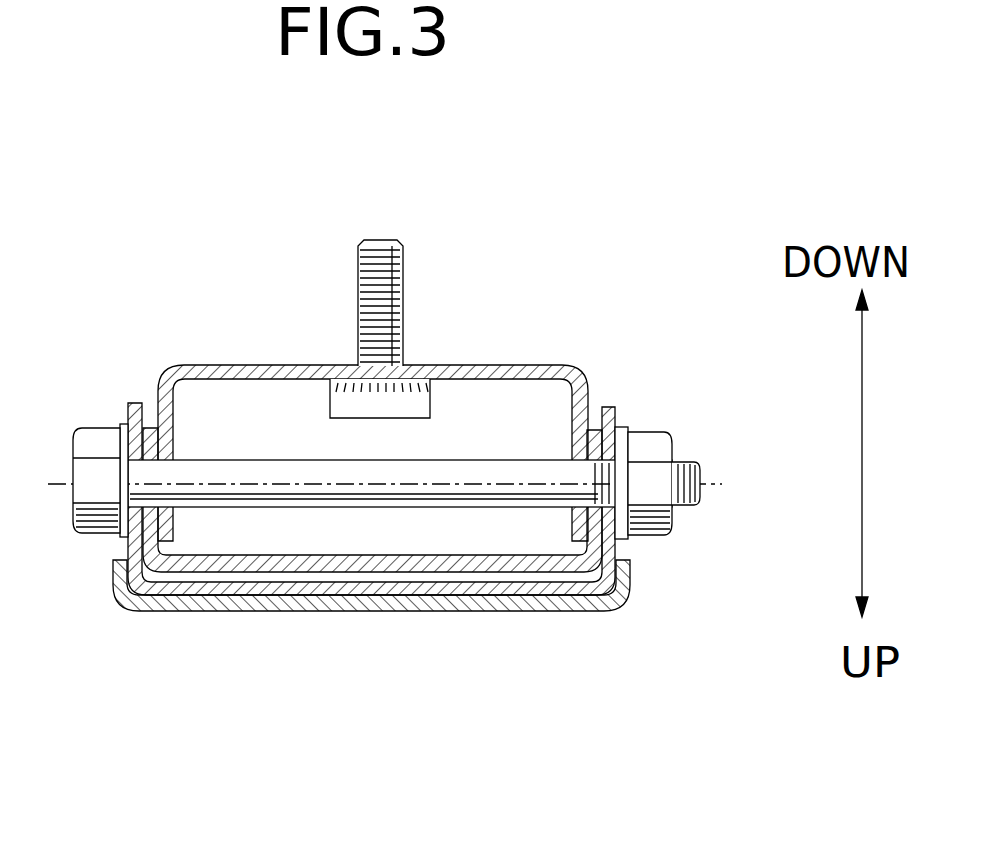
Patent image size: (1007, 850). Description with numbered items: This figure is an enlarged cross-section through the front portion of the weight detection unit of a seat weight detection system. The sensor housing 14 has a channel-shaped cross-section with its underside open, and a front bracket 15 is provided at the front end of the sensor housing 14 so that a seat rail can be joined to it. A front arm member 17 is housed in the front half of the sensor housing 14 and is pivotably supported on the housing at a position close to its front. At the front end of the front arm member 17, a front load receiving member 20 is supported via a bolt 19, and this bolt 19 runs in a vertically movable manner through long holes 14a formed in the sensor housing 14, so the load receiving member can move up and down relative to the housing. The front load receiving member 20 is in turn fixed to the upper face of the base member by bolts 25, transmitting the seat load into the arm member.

The sensor housing 14 is at (320, 605).
The long holes 14a is at (120, 450).
The front bracket 15 is at (455, 605).
The front arm member 17 is at (405, 557).
The bolt 19 is at (290, 470).
The front load receiving member 20 is at (515, 366).
The bolts 25 is at (403, 292).